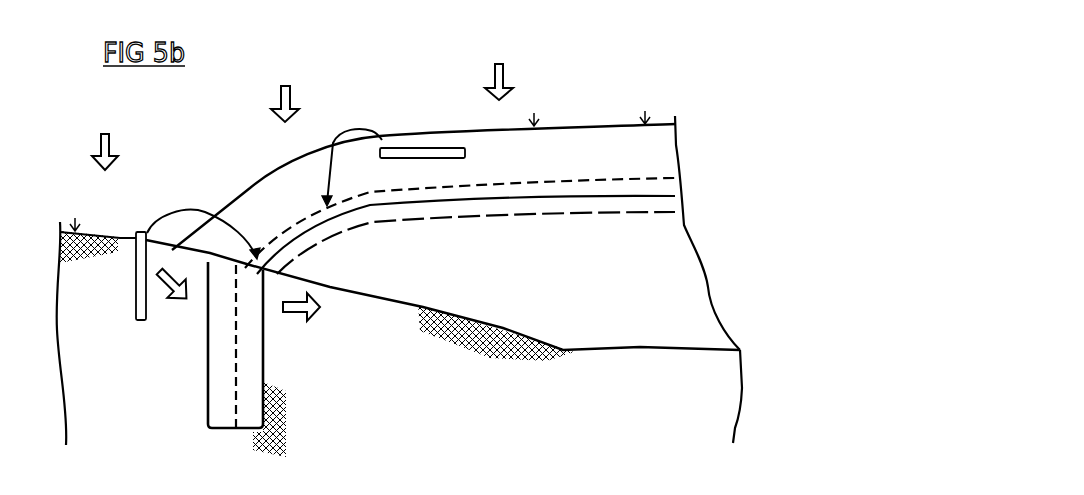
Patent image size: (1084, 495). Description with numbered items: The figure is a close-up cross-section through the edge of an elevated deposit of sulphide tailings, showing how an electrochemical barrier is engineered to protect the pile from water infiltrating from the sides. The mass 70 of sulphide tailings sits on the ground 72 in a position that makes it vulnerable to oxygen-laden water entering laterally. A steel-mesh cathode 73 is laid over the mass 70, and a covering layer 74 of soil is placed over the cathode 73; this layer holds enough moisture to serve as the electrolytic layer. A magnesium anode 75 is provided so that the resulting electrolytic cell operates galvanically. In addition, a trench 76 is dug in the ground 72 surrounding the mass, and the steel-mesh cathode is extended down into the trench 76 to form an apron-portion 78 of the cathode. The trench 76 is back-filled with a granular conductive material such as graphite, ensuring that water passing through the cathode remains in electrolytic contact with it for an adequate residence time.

The mass of sulphide tailings 70 is at (590, 280).
The ground 72 is at (413, 403).
The steel-mesh cathode 73 is at (660, 178).
The covering layer 74 is at (583, 171).
The magnesium anode 75 is at (415, 150).
The trench 76 is at (222, 408).
The apron-portion 78 is at (237, 353).